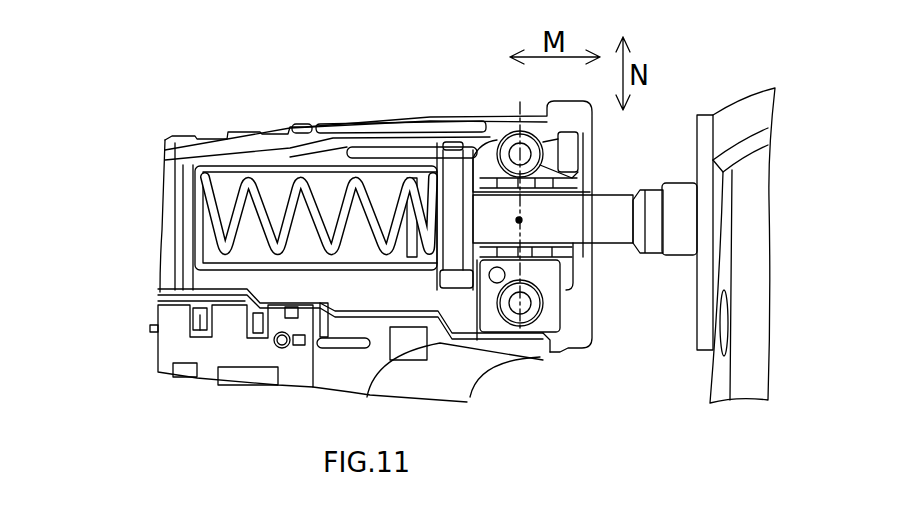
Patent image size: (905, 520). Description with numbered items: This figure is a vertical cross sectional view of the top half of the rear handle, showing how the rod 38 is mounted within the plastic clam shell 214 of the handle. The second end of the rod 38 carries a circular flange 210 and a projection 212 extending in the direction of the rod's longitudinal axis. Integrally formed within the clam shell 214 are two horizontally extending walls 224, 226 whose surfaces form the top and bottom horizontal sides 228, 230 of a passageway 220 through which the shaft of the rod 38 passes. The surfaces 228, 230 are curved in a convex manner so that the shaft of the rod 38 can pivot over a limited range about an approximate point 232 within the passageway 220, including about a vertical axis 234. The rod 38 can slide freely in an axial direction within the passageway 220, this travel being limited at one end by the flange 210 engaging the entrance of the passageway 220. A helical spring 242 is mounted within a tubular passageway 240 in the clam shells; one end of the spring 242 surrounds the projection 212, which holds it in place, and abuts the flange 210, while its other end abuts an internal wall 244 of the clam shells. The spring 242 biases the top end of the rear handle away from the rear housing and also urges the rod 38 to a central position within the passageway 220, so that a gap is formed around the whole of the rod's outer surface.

The rod 38 is at (625, 235).
The circular flange 210 is at (452, 162).
The projection 212 is at (413, 260).
The plastic clam shell 214 is at (298, 127).
The passageway 220 is at (558, 183).
The wall 224 is at (556, 168).
The wall 226 is at (550, 273).
The top horizontal side 228 is at (492, 185).
The bottom horizontal side 230 is at (550, 255).
The approximate point 232 is at (519, 220).
The vertical axis 234 is at (520, 110).
The tubular passageway 240 is at (282, 187).
The helical spring 242 is at (263, 178).
The internal wall 244 is at (190, 207).